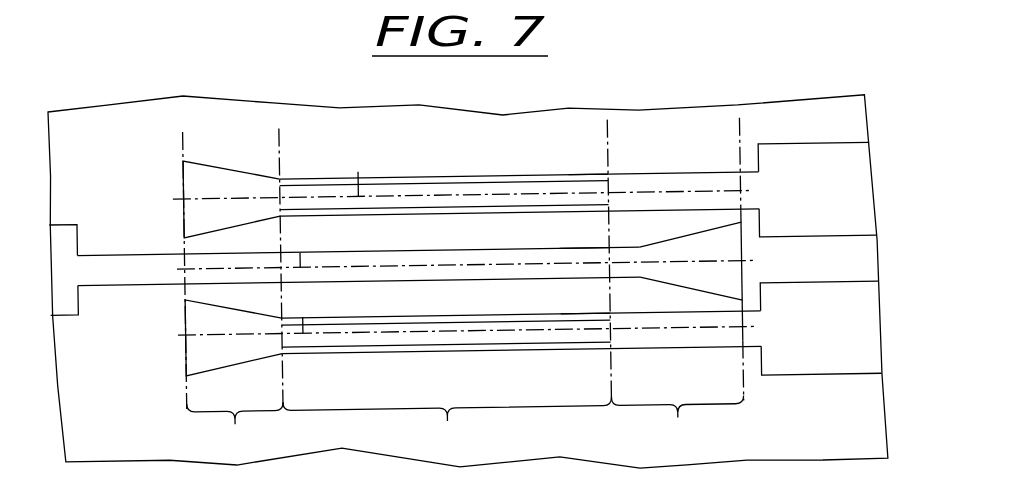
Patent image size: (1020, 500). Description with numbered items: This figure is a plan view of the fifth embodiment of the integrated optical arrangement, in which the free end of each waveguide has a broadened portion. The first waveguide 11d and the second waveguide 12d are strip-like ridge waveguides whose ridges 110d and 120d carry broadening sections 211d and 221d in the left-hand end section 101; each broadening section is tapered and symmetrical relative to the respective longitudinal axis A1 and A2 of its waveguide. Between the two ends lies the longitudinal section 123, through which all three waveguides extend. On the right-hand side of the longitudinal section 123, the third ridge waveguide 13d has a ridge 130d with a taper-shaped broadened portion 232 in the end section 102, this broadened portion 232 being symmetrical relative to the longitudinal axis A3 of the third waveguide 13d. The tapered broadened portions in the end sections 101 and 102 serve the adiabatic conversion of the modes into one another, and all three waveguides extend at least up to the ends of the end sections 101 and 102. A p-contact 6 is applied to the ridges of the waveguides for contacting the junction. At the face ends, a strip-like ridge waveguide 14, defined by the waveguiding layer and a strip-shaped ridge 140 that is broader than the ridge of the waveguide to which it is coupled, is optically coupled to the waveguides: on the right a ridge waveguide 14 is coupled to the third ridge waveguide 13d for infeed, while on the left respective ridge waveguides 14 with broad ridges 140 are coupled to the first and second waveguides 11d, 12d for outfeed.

The strip-like ridge waveguide 14 is at (65, 214).
The strip-shaped ridge 140 is at (64, 299).
The ridge 110d is at (521, 176).
The ridge 120d is at (471, 316).
The ridge 130d is at (435, 250).
The broadening section 211d is at (208, 190).
The broadening section 221d is at (211, 313).
The taper-shaped broadened portion 232 is at (734, 251).
The p-contact 6 is at (460, 192).
The first waveguide 11d is at (587, 169).
The second waveguide 12d is at (569, 307).
The third ridge waveguide 13d is at (584, 232).
The longitudinal axis A1 is at (360, 170).
The longitudinal axis A2 is at (302, 315).
The longitudinal axis A3 is at (300, 251).
The end section 101 is at (233, 293).
The longitudinal section 123 is at (445, 289).
The end section 102 is at (675, 284).